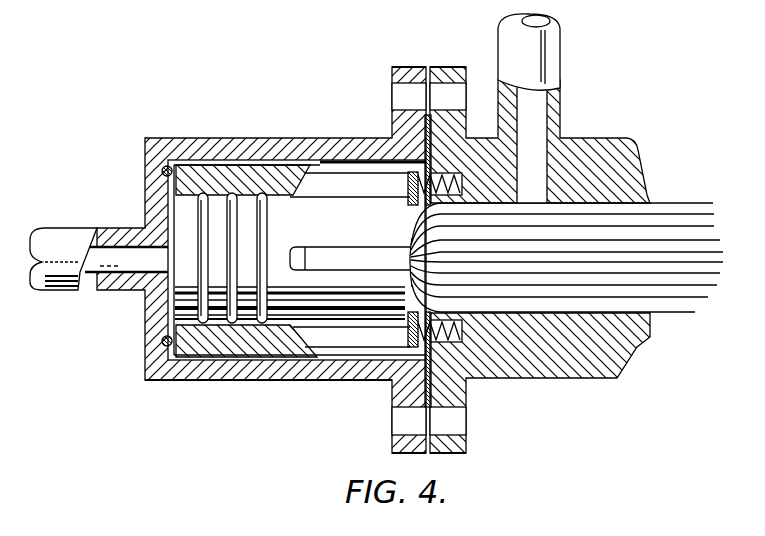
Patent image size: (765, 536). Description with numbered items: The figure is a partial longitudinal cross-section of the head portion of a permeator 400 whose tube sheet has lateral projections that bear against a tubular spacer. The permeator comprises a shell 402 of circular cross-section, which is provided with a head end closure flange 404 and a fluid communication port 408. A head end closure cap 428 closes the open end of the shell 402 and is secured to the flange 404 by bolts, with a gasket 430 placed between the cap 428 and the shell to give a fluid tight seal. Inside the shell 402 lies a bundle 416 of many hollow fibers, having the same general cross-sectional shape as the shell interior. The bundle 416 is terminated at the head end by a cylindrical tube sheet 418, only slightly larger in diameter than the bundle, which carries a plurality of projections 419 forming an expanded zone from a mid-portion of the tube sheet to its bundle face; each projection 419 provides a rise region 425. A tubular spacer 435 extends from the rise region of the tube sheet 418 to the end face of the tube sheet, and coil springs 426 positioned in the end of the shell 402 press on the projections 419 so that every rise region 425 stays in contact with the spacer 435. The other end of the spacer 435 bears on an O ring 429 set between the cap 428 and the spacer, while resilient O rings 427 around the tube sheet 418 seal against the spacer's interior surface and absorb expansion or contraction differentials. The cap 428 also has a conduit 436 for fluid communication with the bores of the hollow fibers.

The permeator 400 is at (588, 121).
The shell 402 is at (590, 380).
The head end closure flange 404 is at (468, 450).
The fluid communication port 408 is at (558, 52).
The bundle 416 is at (638, 235).
The tube sheet 418 is at (188, 225).
The projection 419 is at (358, 330).
The rise region 425 is at (298, 256).
The coil spring 426 is at (460, 327).
The O ring 427 is at (232, 197).
The head end closure cap 428 is at (232, 382).
The O ring 429 is at (160, 343).
The gasket 430 is at (425, 120).
The tubular spacer 435 is at (262, 190).
The conduit 436 is at (62, 292).